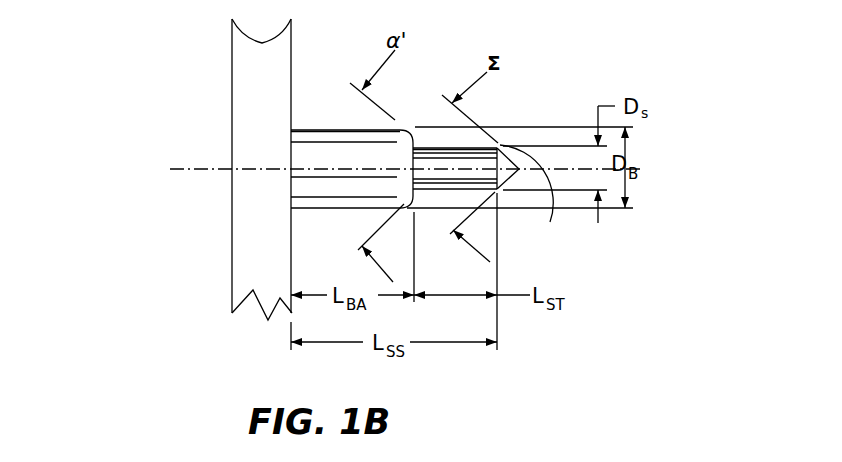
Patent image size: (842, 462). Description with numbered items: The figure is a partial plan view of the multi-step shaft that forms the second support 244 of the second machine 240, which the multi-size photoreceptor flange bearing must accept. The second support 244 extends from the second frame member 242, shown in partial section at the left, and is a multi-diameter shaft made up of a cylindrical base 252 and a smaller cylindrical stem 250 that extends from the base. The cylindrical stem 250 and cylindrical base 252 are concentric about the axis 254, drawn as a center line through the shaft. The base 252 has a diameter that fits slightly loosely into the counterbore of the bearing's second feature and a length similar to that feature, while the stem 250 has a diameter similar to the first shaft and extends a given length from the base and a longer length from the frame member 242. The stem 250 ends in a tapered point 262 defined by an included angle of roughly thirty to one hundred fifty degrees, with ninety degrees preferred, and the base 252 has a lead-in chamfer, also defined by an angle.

The machine 240 is at (178, 263).
The second frame member 242 is at (238, 113).
The second support 244 is at (483, 40).
The cylindrical stem 250 is at (433, 147).
The cylindrical base 252 is at (309, 127).
The axis 254 is at (192, 172).
The tapered point 262 is at (533, 198).